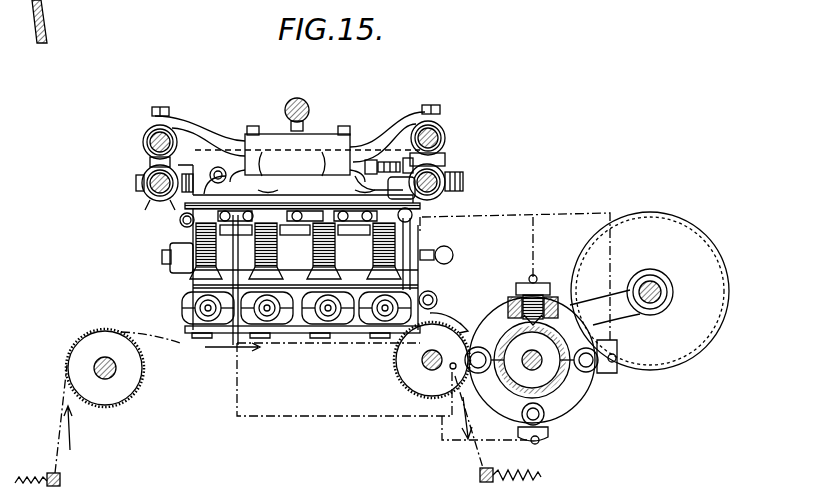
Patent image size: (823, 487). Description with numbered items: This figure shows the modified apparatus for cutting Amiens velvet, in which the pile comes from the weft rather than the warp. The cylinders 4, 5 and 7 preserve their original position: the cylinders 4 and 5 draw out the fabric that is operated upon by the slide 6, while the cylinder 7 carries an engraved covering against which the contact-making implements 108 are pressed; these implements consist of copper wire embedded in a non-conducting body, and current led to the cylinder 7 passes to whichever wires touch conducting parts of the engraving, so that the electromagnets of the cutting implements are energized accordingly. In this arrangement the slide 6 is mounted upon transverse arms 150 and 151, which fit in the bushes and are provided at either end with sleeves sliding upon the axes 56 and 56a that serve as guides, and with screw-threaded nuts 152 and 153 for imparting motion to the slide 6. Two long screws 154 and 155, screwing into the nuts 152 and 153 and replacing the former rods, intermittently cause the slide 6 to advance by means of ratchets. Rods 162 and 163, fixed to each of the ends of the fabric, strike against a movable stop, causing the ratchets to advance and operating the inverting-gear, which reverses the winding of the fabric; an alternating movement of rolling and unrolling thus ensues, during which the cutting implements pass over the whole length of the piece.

The cylinder 4 is at (127, 402).
The cylinder 5 is at (420, 396).
The slide 6 is at (307, 146).
The cylinder 7 is at (545, 374).
The axis 56 is at (141, 197).
The axis 56a is at (442, 180).
The contact-making implements 108 is at (525, 280).
The transverse arm 150 is at (181, 222).
The transverse arm 151 is at (212, 140).
The screw-threaded nut 152 is at (175, 133).
The screw-threaded nut 153 is at (437, 126).
The long screw 154 is at (143, 142).
The long screw 155 is at (442, 142).
The rod 162 is at (62, 480).
The rod 163 is at (478, 476).